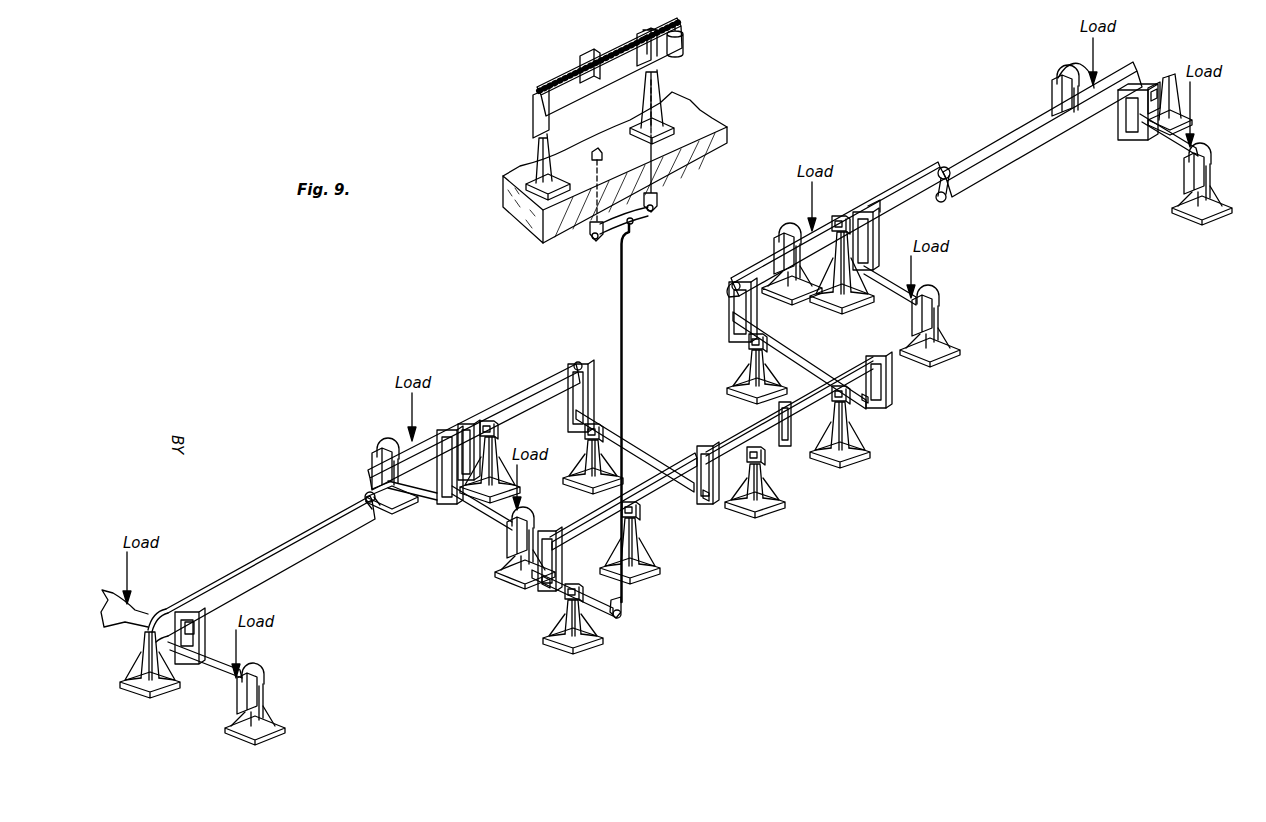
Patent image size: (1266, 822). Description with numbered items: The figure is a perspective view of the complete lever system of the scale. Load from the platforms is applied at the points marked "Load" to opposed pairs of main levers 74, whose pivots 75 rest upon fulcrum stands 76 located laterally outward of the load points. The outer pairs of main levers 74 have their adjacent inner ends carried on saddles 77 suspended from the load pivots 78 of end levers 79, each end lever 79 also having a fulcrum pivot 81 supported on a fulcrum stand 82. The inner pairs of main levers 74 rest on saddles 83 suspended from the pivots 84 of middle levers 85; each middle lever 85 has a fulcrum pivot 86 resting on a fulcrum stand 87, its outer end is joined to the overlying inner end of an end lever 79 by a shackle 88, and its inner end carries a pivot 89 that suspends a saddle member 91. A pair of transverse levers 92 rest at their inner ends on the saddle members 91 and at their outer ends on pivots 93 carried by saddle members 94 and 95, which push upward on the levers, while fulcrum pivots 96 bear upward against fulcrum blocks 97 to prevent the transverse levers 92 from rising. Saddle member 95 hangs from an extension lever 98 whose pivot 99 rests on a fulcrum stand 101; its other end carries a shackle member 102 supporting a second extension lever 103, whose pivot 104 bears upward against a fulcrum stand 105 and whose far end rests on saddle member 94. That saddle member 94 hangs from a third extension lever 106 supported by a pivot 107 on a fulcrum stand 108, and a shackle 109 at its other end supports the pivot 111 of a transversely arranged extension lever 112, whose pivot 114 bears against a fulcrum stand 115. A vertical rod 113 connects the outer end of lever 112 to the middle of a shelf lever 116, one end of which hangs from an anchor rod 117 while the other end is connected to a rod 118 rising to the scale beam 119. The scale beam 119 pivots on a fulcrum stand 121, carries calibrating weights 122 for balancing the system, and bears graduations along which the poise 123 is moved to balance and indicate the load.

The main lever 74 is at (1077, 63).
The pivot 75 is at (1062, 75).
The fulcrum stand 76 is at (1058, 95).
The saddle 77 is at (1124, 138).
The load pivot 78 is at (1152, 76).
The end lever 79 is at (1030, 152).
The fulcrum pivot 81 is at (1170, 78).
The fulcrum stand 82 is at (1167, 122).
The saddle 83 is at (874, 243).
The pivot 84 is at (870, 207).
The middle lever 85 is at (918, 188).
The fulcrum pivot 86 is at (840, 216).
The fulcrum stand 87 is at (838, 314).
The shackle 88 is at (951, 174).
The pivot 89 is at (740, 282).
The saddle member 91 is at (730, 297).
The transverse lever 92 is at (806, 366).
The pivot 93 is at (866, 402).
The saddle member 94 is at (710, 445).
The saddle member 95 is at (892, 382).
The fulcrum pivot 96 is at (748, 345).
The fulcrum block 97 is at (740, 388).
The extension lever 98 is at (823, 395).
The pivot 99 is at (844, 404).
The fulcrum stand 101 is at (851, 466).
The shackle member 102 is at (791, 425).
The second extension lever 103 is at (772, 447).
The pivot 104 is at (755, 446).
The fulcrum stand 105 is at (770, 492).
The third extension lever 106 is at (660, 490).
The pivot 107 is at (640, 512).
The fulcrum stand 108 is at (650, 565).
The shackle 109 is at (557, 557).
The pivot 111 is at (544, 592).
The extension lever 112 is at (606, 618).
The rod 113 is at (624, 363).
The pivot 114 is at (563, 608).
The fulcrum stand 115 is at (582, 645).
The shelf lever 116 is at (638, 222).
The anchor rod 117 is at (580, 230).
The rod 118 is at (654, 190).
The scale beam 119 is at (630, 33).
The fulcrum stand 121 is at (658, 58).
The calibrating weight 122 is at (686, 44).
The poise 123 is at (580, 63).